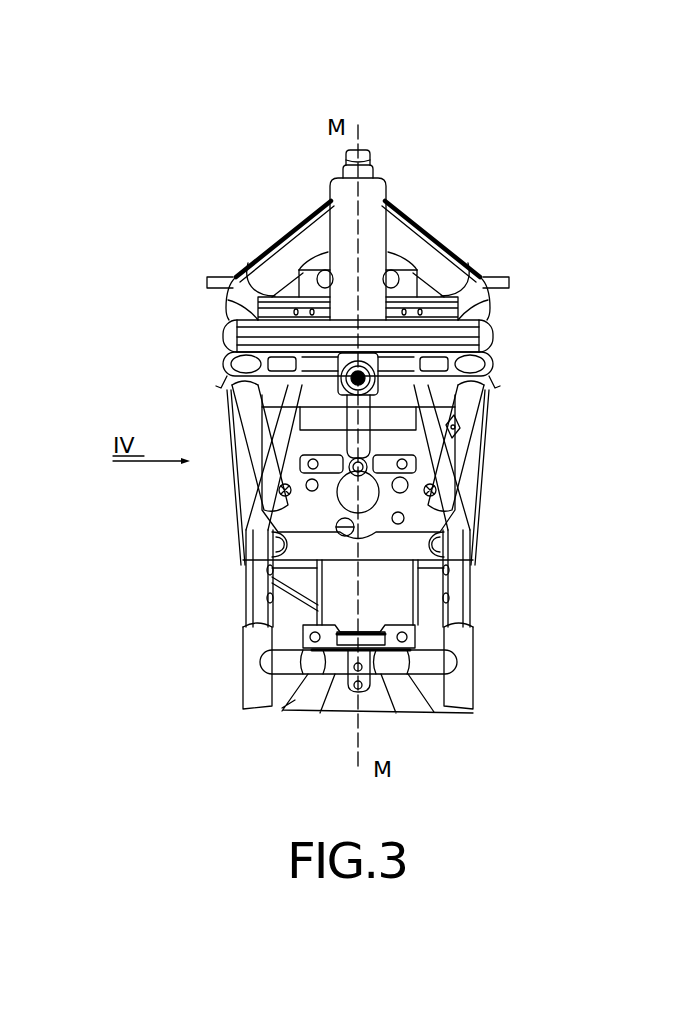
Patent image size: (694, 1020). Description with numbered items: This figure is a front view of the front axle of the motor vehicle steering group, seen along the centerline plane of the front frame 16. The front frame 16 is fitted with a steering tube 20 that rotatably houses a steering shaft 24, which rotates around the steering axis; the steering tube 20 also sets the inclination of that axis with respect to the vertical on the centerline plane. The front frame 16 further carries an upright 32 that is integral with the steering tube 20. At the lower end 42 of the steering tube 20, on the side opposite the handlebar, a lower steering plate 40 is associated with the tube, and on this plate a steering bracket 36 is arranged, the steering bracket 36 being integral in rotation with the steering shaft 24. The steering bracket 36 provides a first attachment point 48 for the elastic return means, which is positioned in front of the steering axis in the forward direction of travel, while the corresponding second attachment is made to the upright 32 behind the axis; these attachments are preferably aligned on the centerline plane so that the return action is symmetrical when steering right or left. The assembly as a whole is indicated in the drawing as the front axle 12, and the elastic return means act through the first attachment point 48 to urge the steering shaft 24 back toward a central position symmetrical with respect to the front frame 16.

The suspension assembly 12 is at (195, 175).
The steering tube 20 is at (343, 195).
The steering shaft 24 is at (363, 150).
The front frame 16 is at (405, 210).
The lower end 42 is at (402, 311).
The lower steering plate 40 is at (493, 347).
The steering bracket 36 is at (492, 385).
The upright 32 is at (397, 503).
The first attachment point 48 is at (336, 409).